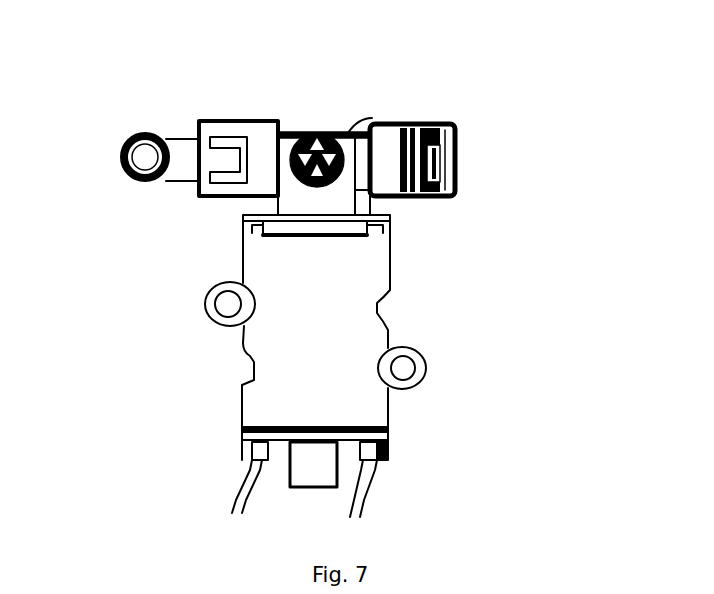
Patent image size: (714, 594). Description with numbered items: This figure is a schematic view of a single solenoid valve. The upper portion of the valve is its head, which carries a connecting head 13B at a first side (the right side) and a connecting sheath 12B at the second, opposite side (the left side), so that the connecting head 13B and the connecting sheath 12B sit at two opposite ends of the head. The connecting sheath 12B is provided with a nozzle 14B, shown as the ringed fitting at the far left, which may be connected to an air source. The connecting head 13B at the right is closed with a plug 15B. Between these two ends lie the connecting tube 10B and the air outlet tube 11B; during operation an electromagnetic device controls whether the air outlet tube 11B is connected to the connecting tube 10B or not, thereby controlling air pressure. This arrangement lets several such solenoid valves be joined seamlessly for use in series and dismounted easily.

The connecting tube 10B is at (377, 124).
The air outlet tube 11B is at (302, 133).
The connecting sheath 12B is at (207, 135).
The connecting head 13B is at (457, 152).
The nozzle 14B is at (180, 172).
The plug 15B is at (457, 180).